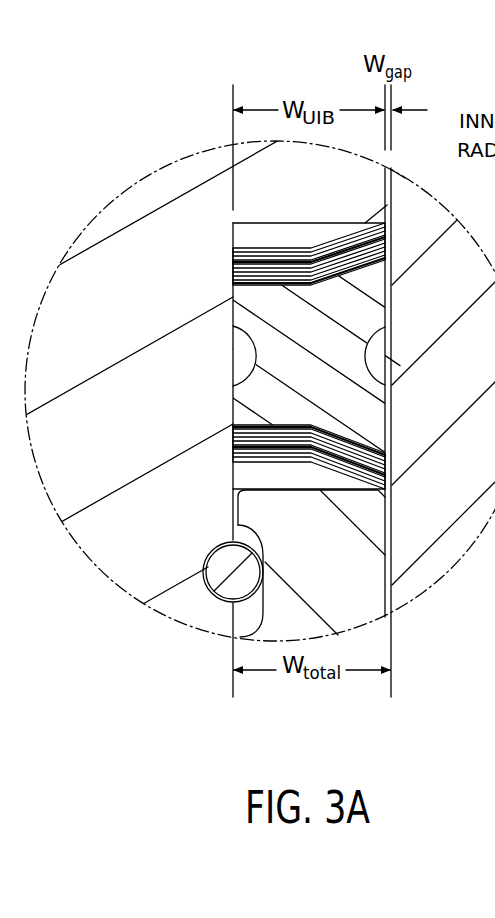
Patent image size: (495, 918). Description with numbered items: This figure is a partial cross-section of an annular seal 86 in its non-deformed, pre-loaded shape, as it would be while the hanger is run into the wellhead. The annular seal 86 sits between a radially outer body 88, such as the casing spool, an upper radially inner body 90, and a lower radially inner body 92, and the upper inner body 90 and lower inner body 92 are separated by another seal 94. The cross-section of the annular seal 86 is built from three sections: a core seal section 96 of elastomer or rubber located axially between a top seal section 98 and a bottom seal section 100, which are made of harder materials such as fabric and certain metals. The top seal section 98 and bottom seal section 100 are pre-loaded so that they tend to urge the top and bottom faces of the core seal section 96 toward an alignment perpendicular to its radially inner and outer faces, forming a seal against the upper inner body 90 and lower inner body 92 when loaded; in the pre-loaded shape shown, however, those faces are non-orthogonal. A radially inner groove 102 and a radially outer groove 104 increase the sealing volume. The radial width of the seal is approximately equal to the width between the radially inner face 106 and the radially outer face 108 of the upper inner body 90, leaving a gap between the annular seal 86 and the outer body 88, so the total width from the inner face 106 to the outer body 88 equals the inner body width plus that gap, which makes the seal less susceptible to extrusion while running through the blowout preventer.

The annular seal 86 is at (413, 272).
The radially outer body 88 is at (494, 557).
The upper radially inner body 90 is at (145, 190).
The lower radially inner body 92 is at (373, 523).
The seal 94 is at (205, 582).
The core seal section 96 is at (372, 314).
The top seal section 98 is at (246, 270).
The bottom seal section 100 is at (240, 441).
The radially inner groove 102 is at (243, 356).
The radially outer groove 104 is at (381, 354).
The radially inner face 106 is at (233, 224).
The radially outer face 108 is at (385, 193).